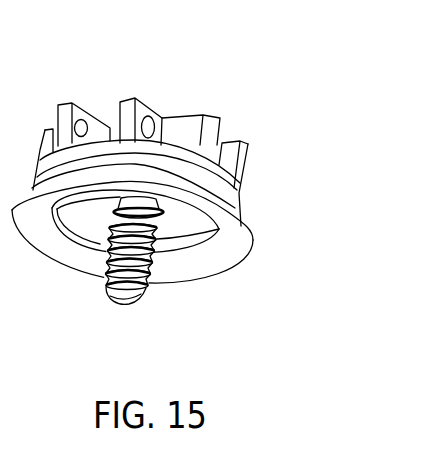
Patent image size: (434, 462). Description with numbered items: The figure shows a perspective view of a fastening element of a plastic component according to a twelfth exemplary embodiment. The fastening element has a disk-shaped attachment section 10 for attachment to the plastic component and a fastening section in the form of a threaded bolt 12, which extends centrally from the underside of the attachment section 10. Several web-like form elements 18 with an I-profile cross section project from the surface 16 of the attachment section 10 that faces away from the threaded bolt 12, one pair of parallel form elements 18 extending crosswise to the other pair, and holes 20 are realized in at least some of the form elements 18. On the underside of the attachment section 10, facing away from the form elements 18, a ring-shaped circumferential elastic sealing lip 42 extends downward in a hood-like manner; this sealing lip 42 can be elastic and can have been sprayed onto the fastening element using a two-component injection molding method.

The attachment section 10 is at (237, 200).
The threaded bolt 12 is at (122, 300).
The surface 16 is at (105, 130).
The form element 18 is at (192, 130).
The hole 20 is at (147, 124).
The sealing lip 42 is at (228, 251).